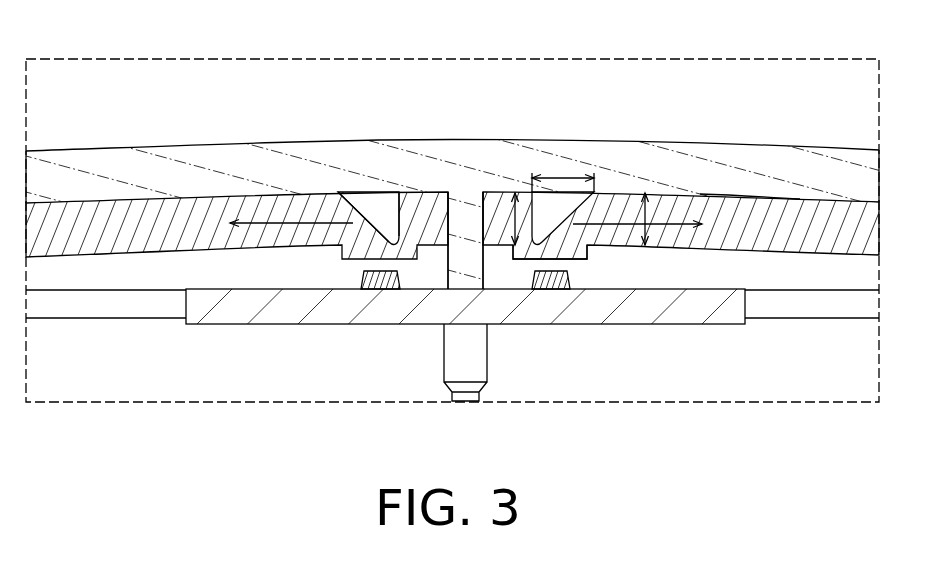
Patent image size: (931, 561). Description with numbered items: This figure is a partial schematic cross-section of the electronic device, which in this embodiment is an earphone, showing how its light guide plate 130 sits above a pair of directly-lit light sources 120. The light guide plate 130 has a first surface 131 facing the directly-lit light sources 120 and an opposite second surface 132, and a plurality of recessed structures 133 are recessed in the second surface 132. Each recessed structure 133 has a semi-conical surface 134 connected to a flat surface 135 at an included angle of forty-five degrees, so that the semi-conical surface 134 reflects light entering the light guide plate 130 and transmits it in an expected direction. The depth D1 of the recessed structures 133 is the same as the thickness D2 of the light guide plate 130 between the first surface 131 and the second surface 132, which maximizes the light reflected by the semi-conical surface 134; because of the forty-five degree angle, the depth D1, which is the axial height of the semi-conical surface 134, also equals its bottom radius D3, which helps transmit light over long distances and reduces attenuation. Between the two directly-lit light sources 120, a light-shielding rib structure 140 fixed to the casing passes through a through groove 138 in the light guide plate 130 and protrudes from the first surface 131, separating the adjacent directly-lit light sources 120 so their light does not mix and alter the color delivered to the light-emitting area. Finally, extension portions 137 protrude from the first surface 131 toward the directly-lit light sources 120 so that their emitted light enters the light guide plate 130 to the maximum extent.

The directly-lit light source 120 is at (373, 228).
The light guide plate 130 is at (697, 203).
The first surface 131 is at (703, 249).
The second surface 132 is at (777, 197).
The recessed structure 133 is at (375, 213).
The semi-conical surface 134 is at (363, 215).
The flat surface 135 is at (397, 213).
The extension portion 137 is at (526, 258).
The through groove 138 is at (465, 207).
The light-shielding rib structure 140 is at (472, 215).
The depth of the recessed structures D1 is at (514, 200).
The thickness of the light guide plate D2 is at (645, 214).
The bottom radius D3 is at (563, 178).